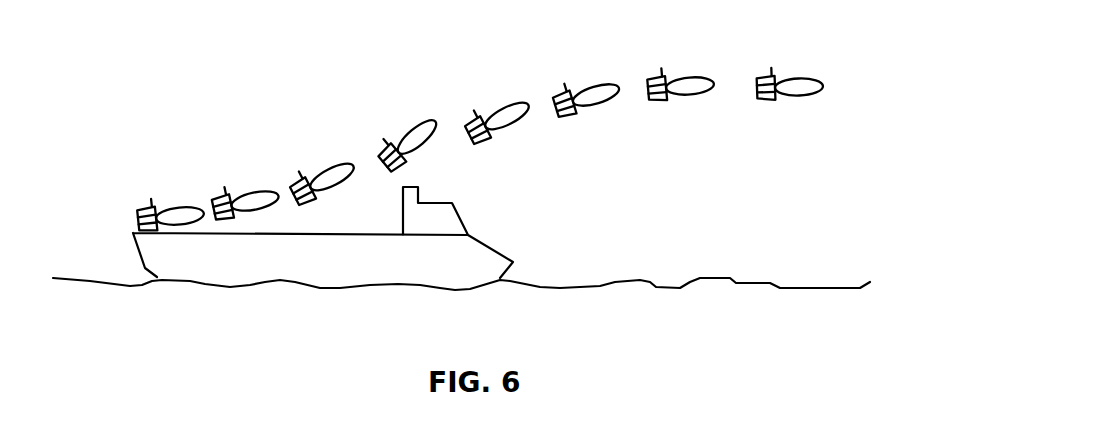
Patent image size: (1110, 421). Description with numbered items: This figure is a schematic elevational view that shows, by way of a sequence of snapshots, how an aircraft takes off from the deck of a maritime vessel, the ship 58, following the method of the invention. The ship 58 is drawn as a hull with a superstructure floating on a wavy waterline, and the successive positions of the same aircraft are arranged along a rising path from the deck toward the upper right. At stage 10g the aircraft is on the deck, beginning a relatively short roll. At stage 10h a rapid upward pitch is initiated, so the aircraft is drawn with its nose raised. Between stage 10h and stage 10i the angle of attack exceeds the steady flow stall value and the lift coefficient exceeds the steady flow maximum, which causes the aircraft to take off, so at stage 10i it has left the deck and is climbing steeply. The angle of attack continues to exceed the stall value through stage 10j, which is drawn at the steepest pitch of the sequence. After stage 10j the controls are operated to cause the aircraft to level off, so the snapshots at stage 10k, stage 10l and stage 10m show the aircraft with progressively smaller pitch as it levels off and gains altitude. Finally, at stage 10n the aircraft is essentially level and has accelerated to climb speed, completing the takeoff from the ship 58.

The aircraft at takeoff roll stage 10g is at (160, 207).
The aircraft at rapid upward pitch stage 10h is at (263, 190).
The aircraft at post-stall lift stage 10i is at (345, 165).
The aircraft at high angle of attack stage 10j is at (412, 118).
The aircraft at leveling off stage 10k is at (502, 102).
The aircraft at leveling off stage 10l is at (587, 85).
The aircraft at acceleration stage 10m is at (685, 80).
The aircraft at climb speed stage 10n is at (810, 75).
The ship 58 is at (387, 267).